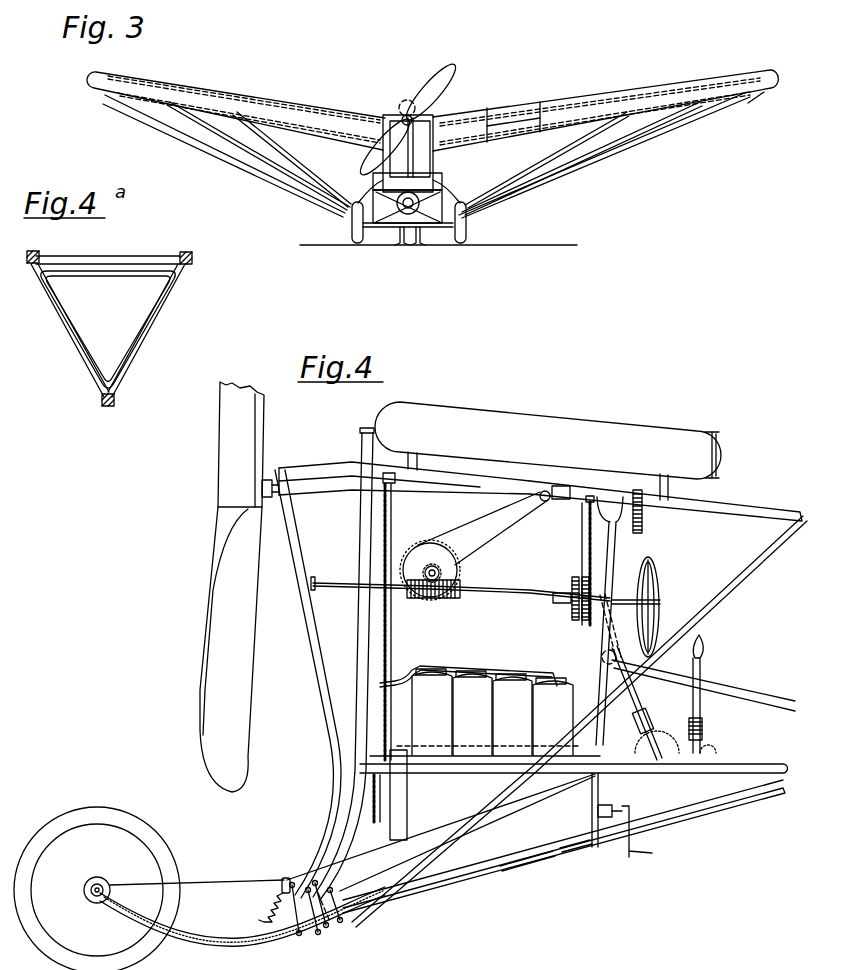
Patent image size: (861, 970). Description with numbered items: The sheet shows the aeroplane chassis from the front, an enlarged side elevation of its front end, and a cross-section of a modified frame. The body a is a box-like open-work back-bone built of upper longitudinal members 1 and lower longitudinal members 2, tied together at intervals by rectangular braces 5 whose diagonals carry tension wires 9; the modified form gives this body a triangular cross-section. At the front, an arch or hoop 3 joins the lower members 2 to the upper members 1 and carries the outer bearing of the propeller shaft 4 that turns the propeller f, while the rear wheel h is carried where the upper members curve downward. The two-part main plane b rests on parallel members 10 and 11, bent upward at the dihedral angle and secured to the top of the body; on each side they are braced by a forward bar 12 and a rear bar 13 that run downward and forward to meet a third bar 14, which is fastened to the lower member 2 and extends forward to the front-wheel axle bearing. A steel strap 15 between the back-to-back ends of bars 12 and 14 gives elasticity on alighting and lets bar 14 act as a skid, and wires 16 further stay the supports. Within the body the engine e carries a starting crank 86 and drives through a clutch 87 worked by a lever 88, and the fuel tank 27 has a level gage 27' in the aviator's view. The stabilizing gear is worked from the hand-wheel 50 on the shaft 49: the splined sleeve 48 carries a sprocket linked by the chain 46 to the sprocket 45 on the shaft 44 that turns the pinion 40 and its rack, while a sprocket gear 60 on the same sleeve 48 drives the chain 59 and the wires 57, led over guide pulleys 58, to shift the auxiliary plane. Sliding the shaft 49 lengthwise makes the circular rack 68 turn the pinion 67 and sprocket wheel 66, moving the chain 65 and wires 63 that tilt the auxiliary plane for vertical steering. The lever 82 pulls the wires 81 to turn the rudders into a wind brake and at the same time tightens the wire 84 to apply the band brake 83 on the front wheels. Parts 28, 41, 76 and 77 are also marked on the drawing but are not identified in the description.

In FIG. 3, the upper longitudinal member 1 is at (415, 126).
In FIG. 4A, the upper longitudinal member 1 is at (38, 247).
In FIG. 4, the upper longitudinal member 1 is at (419, 463).
In FIG. 4A, the lower longitudinal member 2 is at (110, 410).
In FIG. 4, the lower longitudinal member 2 is at (524, 772).
In FIG. 3, the arch or hoop 3 is at (444, 172).
In FIG. 4, the arch or hoop 3 is at (316, 618).
In FIG. 4, the propeller shaft 4 is at (332, 494).
In FIG. 4, the rectangular brace 5 is at (618, 548).
In FIG. 3, the wire 9 is at (358, 245).
In FIG. 4, the wire 9 is at (155, 839).
In FIG. 3, the parallel member 10 is at (486, 113).
In FIG. 3, the parallel member 11 is at (487, 131).
In FIG. 3, the forward bar 12 is at (345, 162).
In FIG. 4, the forward bar 12 is at (360, 637).
In FIG. 3, the rear bar 13 is at (293, 158).
In FIG. 4, the rear bar 13 is at (697, 611).
In FIG. 3, the third bar 14 is at (372, 187).
In FIG. 4, the third bar 14 is at (422, 928).
In FIG. 4, the steel spring or metallic strap 15 is at (193, 940).
In FIG. 3, the wire 16 is at (232, 158).
In FIG. 3, the fuel tank 27 is at (387, 124).
In FIG. 4, the fuel tank 27 is at (548, 429).
In FIG. 4, the level gage 27' is at (728, 455).
In FIG. 3, the wing tip 28 is at (752, 71).
In FIG. 4, the pinion 40 is at (647, 483).
In FIG. 4, the link 41 is at (606, 592).
In FIG. 4, the shaft 44 is at (620, 497).
In FIG. 4, the sprocket 45 is at (593, 503).
In FIG. 4, the chain 46 is at (587, 523).
In FIG. 4, the sleeve 48 is at (563, 605).
In FIG. 4, the shaft 49 is at (548, 596).
In FIG. 4, the hand-wheel 50 is at (660, 581).
In FIG. 4, the wire 57 is at (581, 541).
In FIG. 4, the guide pulley 58 is at (563, 486).
In FIG. 4, the chain 59 is at (574, 578).
In FIG. 4, the sprocket gear 60 is at (576, 622).
In FIG. 4, the wire 63 is at (522, 512).
In FIG. 4, the chain 65 is at (483, 528).
In FIG. 4, the sprocket wheel 66 is at (456, 565).
In FIG. 4, the pinion 67 is at (427, 565).
In FIG. 4, the circular rack 68 is at (458, 600).
In FIG. 4, the lower rail 76 is at (709, 811).
In FIG. 4, the slide 77 is at (552, 862).
In FIG. 4, the wire 81 is at (708, 681).
In FIG. 4, the lever 82 is at (642, 697).
In FIG. 4, the band brake 83 is at (104, 878).
In FIG. 4, the wire 84 is at (495, 811).
In FIG. 4, the starting crank 86 is at (640, 856).
In FIG. 4, the clutch 87 is at (387, 811).
In FIG. 4, the lever 88 is at (705, 648).
In FIG. 3, the body a is at (415, 163).
In FIG. 4A, the body a is at (108, 326).
In FIG. 4, the body a is at (666, 501).
In FIG. 3, the main plane b is at (432, 110).
In FIG. 3, the engine e is at (408, 217).
In FIG. 4, the engine e is at (543, 711).
In FIG. 3, the propeller f is at (440, 80).
In FIG. 4, the propeller f is at (242, 660).
In FIG. 3, the rear wheel h is at (409, 244).